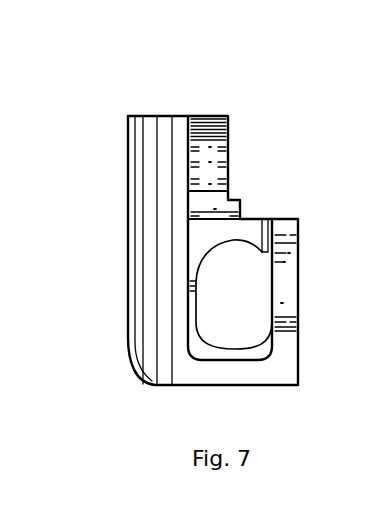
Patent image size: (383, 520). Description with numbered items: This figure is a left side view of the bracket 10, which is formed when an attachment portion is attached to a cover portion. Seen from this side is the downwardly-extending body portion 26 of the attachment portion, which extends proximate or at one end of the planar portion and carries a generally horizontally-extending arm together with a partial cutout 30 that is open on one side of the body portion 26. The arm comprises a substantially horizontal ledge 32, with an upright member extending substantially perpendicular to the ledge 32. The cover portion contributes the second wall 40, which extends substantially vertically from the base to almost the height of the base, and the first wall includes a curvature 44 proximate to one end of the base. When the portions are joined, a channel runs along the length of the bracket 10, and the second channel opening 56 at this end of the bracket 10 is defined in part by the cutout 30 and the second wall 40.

The bracket 10 is at (199, 206).
The body portion 26 is at (205, 233).
The partial cutout 30 is at (203, 292).
The ledge 32 is at (258, 220).
The second wall 40 is at (300, 345).
The curvature 44 is at (155, 302).
The second channel opening 56 is at (252, 324).